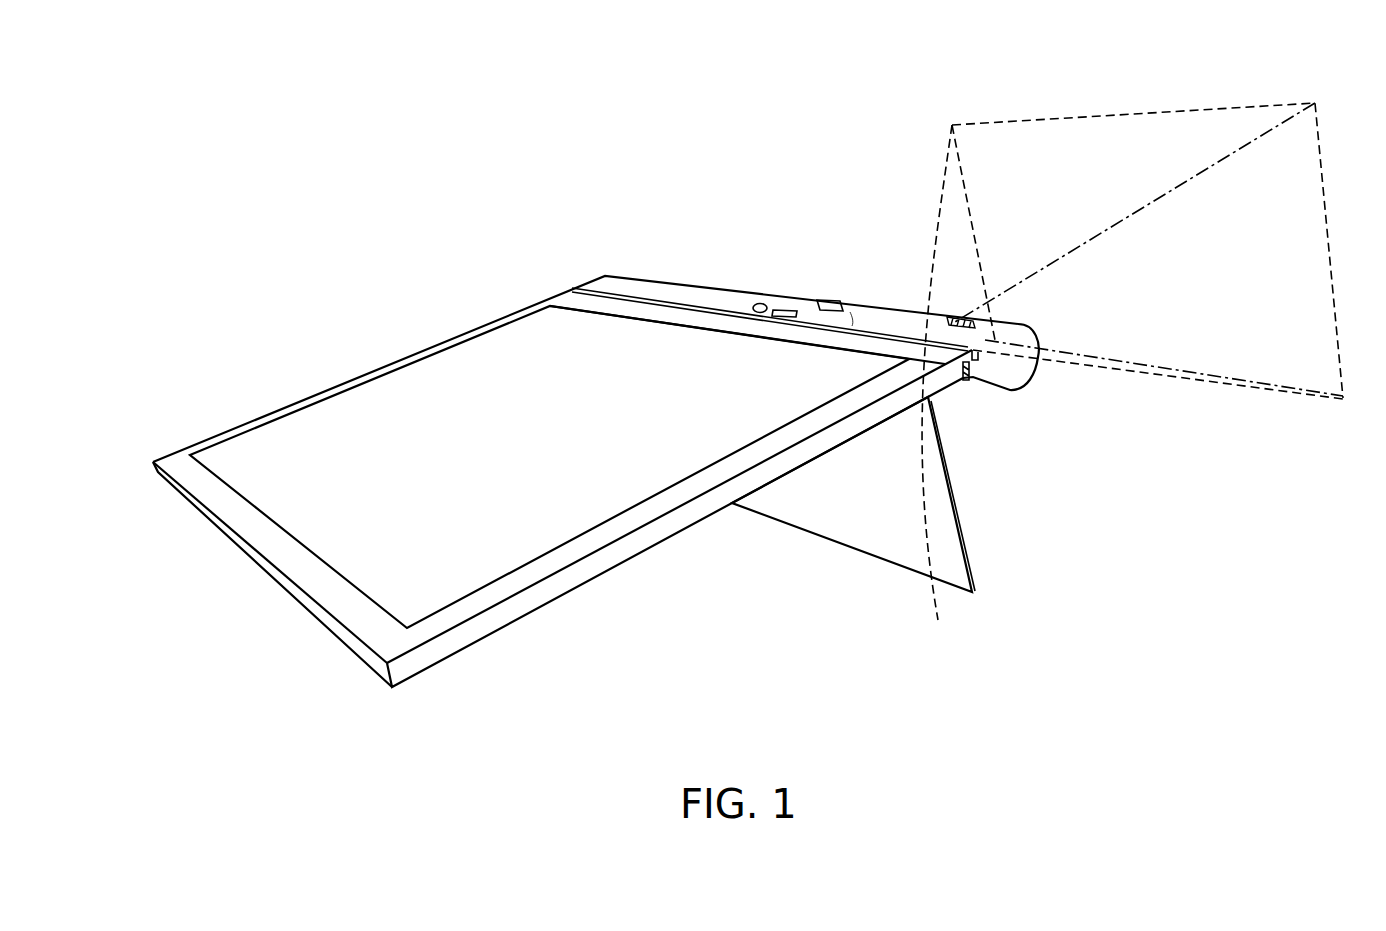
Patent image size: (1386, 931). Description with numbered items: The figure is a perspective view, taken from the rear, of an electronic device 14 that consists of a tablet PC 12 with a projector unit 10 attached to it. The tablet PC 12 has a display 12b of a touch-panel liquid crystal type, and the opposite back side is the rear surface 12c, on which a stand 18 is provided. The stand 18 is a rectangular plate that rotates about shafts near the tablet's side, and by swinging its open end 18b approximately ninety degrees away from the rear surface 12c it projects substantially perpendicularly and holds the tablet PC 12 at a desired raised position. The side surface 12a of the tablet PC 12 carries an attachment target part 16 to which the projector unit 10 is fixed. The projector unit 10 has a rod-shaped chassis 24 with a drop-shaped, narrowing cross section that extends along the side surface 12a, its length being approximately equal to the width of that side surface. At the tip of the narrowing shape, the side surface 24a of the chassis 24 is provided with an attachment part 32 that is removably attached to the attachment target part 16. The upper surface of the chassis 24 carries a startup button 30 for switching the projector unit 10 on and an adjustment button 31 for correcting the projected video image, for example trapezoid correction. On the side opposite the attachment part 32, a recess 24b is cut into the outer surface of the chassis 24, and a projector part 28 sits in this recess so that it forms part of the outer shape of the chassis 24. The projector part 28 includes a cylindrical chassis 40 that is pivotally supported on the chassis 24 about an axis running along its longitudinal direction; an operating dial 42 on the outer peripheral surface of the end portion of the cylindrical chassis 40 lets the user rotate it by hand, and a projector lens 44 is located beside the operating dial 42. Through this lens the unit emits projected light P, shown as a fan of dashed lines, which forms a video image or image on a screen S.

The projector unit 10 is at (641, 280).
The tablet PC 12 is at (541, 594).
The side surface 12a is at (1022, 382).
The attachment target part 16 is at (985, 392).
The display 12b is at (472, 563).
The rear surface 12c is at (647, 550).
The electronic device 14 is at (351, 307).
The stand 18 is at (797, 510).
The open end 18b is at (973, 594).
The chassis 24 is at (712, 298).
The side surface 24a is at (999, 411).
The attachment part 32 is at (963, 383).
The recess 24b is at (850, 310).
The projector part 28 is at (856, 301).
The startup button 30 is at (758, 304).
The adjustment button 31 is at (791, 302).
The cylindrical chassis 40 is at (889, 312).
The operating dial 42 is at (955, 320).
The projector lens 44 is at (936, 385).
The screen S is at (1101, 114).
The projected light P is at (1233, 153).